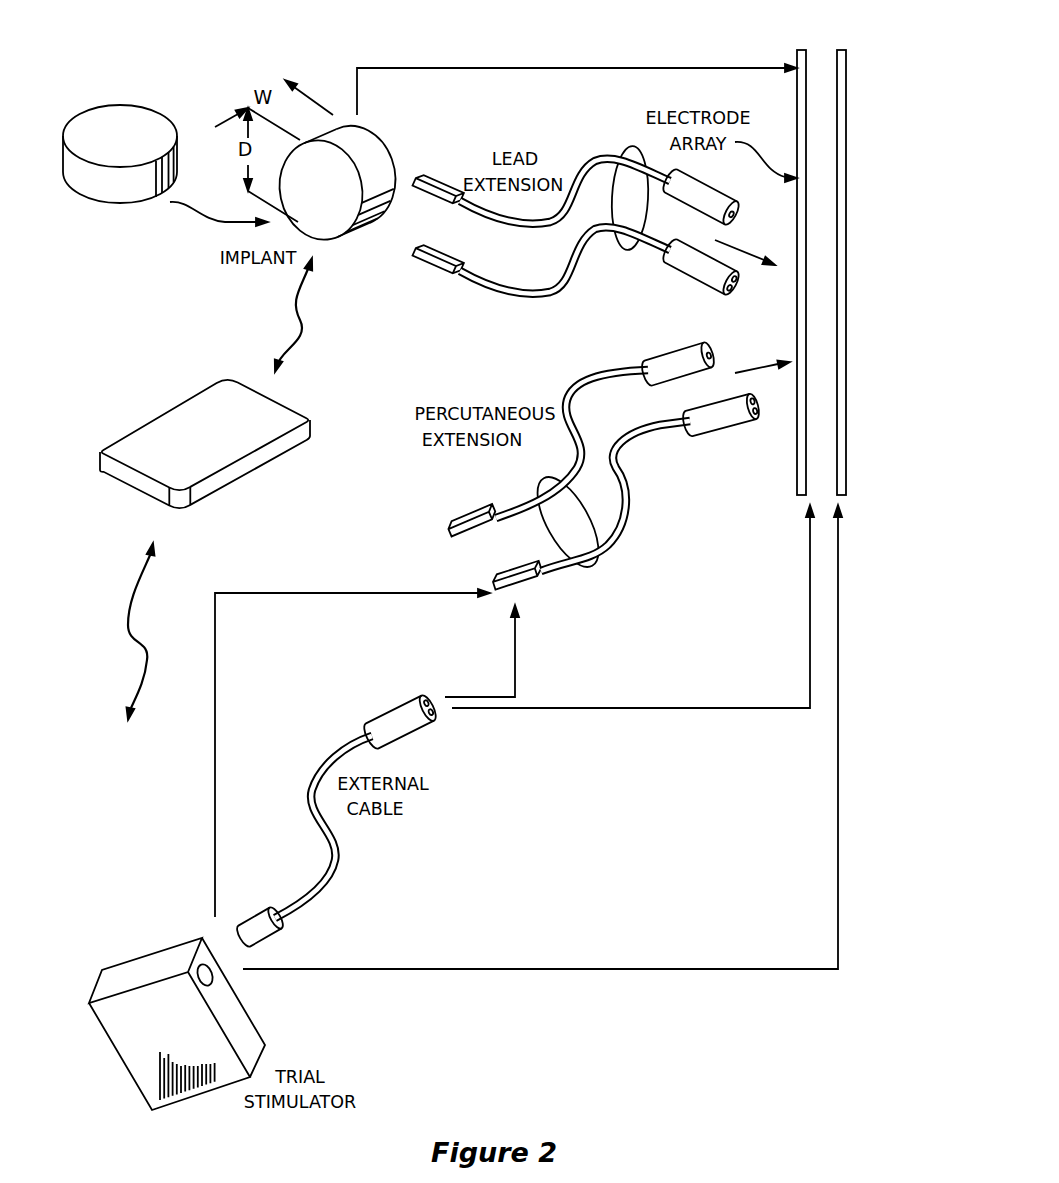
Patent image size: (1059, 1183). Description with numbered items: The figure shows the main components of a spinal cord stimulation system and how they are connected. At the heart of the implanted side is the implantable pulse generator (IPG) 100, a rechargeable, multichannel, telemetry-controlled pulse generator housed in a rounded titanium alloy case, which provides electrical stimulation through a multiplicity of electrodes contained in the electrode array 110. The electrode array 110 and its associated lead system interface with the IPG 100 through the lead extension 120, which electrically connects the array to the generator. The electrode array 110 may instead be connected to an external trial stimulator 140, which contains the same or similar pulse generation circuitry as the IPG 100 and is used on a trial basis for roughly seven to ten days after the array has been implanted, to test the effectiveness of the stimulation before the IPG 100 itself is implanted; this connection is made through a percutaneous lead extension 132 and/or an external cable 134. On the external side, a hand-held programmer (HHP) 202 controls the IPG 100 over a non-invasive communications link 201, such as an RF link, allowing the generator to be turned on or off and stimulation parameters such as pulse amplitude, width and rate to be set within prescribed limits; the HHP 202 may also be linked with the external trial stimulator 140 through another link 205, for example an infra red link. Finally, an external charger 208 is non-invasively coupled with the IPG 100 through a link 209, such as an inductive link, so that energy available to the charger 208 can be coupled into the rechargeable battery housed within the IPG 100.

The implantable pulse generator (IPG) 100 is at (375, 150).
The electrode array 110 is at (820, 53).
The lead extension 120 is at (633, 147).
The percutaneous lead extension 132 is at (545, 484).
The external cable 134 is at (342, 750).
The external trial stimulator 140 is at (143, 968).
The non-invasive communications link 201 is at (305, 306).
The hand-held programmer (HHP) 202 is at (180, 412).
The link 205 is at (137, 590).
The external charger 208 is at (118, 112).
The link 209 is at (208, 210).